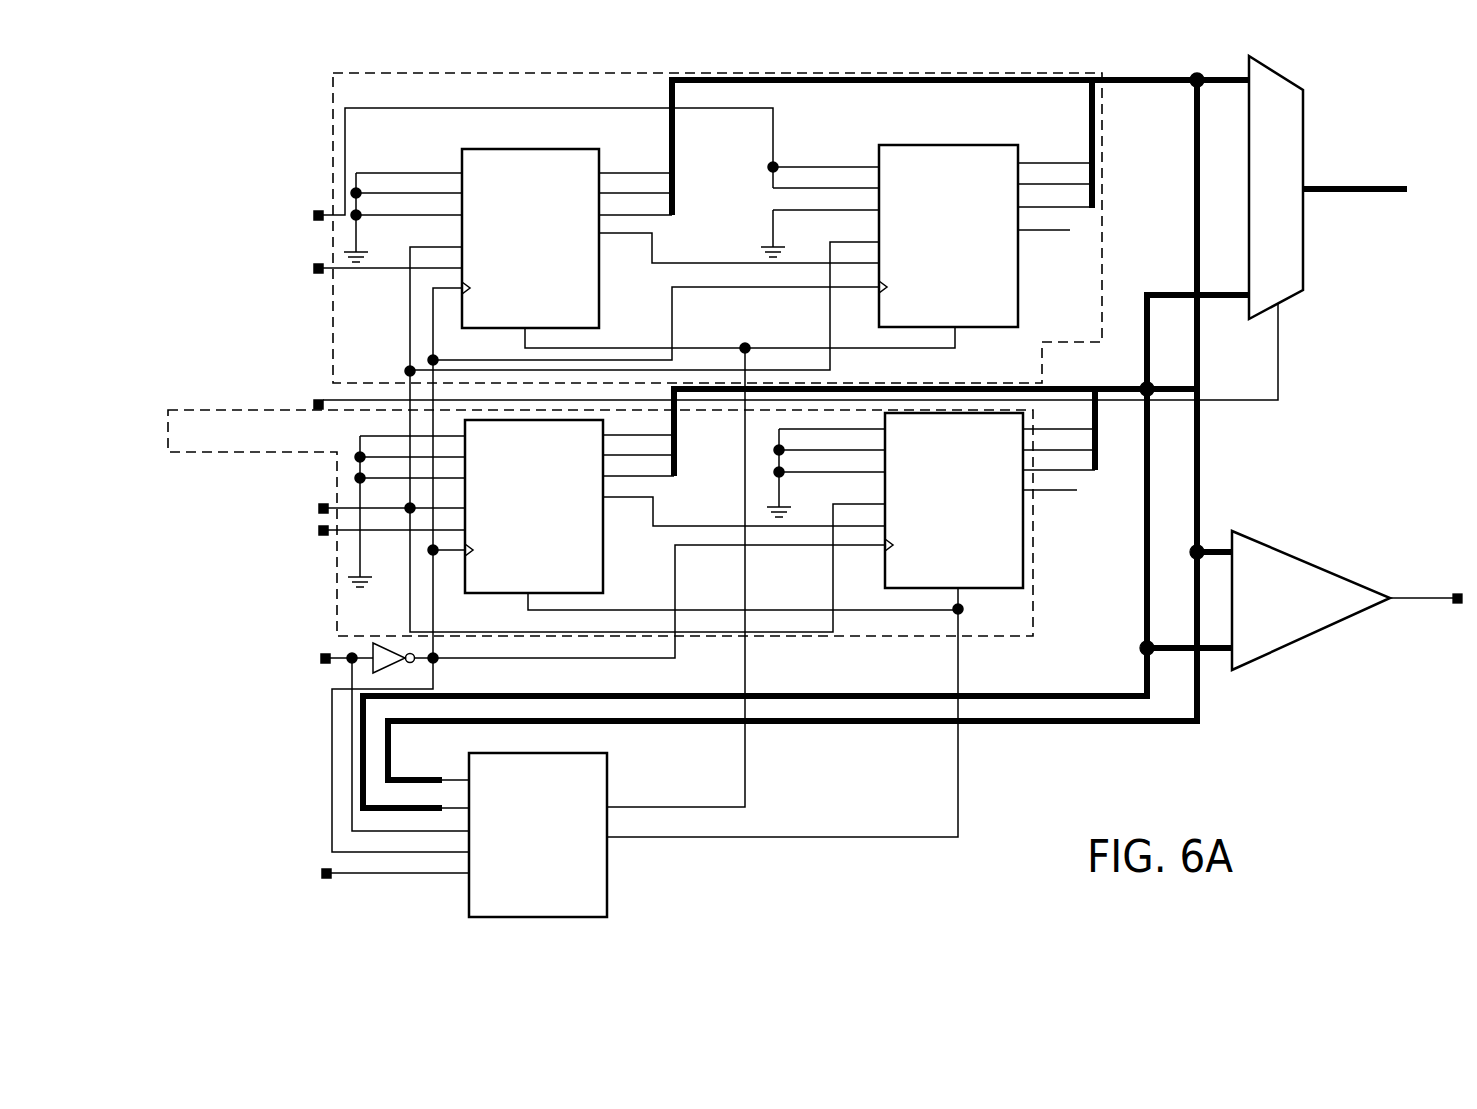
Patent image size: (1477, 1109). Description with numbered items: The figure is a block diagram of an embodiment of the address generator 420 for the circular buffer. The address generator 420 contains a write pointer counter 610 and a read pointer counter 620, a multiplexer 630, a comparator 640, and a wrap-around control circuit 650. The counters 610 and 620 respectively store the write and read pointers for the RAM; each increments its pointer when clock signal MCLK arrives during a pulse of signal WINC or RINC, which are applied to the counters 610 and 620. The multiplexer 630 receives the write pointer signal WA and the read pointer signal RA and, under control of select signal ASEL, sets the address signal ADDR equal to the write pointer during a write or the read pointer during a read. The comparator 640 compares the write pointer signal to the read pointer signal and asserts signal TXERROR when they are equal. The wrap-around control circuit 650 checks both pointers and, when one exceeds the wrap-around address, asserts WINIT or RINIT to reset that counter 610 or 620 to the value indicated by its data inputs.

The address generator 420 is at (230, 82).
The write pointer counter 610 is at (333, 167).
The read pointer counter 620 is at (213, 413).
The multiplexer 630 is at (1305, 108).
The comparator 640 is at (1312, 560).
The wrap-around control circuit 650 is at (520, 899).